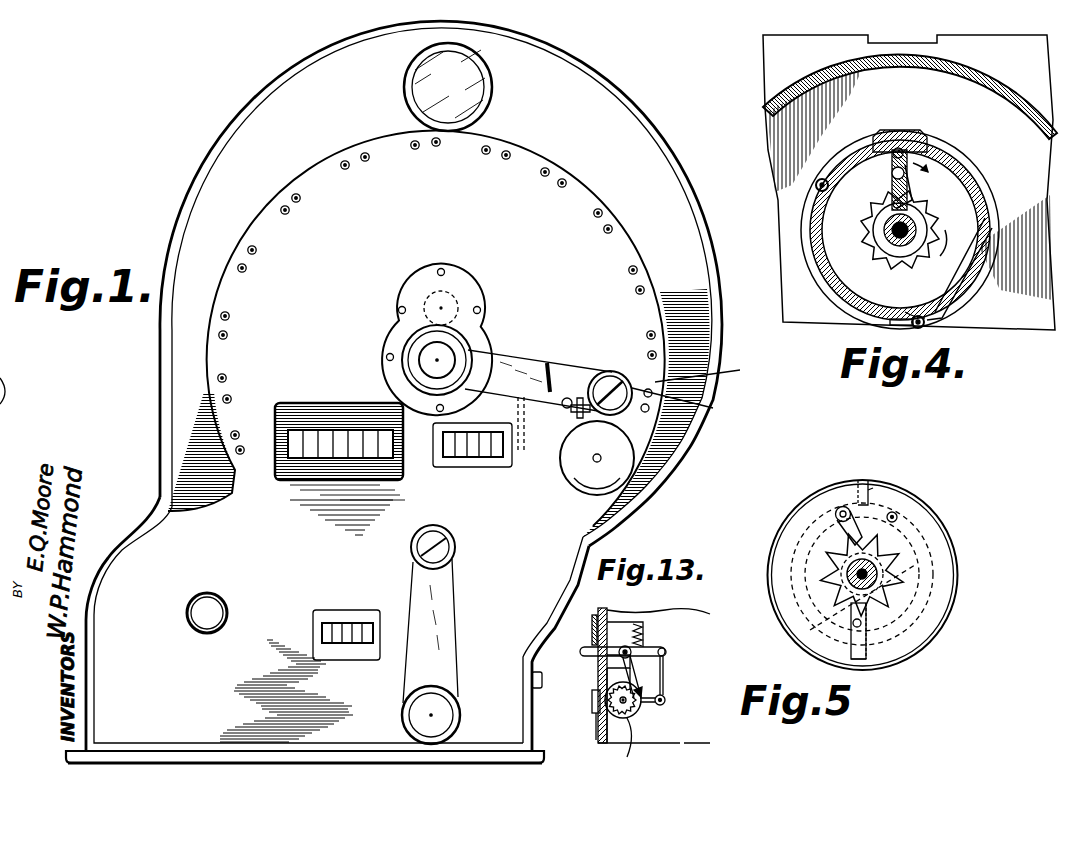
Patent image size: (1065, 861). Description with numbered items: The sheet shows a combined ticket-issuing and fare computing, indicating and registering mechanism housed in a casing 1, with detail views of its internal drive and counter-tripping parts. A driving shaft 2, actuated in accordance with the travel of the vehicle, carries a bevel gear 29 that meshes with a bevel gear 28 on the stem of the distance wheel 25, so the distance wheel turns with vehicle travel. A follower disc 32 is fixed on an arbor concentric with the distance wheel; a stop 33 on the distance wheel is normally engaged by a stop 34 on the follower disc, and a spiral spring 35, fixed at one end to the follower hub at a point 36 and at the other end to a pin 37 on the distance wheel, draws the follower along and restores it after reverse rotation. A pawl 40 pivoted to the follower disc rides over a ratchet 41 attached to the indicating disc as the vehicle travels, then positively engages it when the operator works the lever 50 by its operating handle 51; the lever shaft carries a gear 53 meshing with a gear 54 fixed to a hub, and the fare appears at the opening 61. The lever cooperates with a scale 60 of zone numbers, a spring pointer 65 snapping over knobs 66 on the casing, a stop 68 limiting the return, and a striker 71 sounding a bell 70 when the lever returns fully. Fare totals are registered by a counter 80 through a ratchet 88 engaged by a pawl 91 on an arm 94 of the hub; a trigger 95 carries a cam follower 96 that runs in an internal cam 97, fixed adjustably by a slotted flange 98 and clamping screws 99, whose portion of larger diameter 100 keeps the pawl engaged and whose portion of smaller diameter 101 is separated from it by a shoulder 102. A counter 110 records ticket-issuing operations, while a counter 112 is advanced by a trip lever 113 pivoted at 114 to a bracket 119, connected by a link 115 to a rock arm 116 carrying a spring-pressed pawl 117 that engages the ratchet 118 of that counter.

In FIG. 1, the casing 1 is at (159, 371).
In FIG. 13, the casing 1 is at (597, 730).
In FIG. 4, the casing 1 is at (1033, 118).
In FIG. 5, the driving shaft 2 is at (868, 650).
In FIG. 5, the distance wheel 25 is at (928, 513).
In FIG. 5, the bevel gear 28 is at (930, 560).
In FIG. 5, the bevel gear 29 is at (918, 584).
In FIG. 5, the follower disc 32 is at (920, 628).
In FIG. 5, the stop 33 is at (870, 482).
In FIG. 5, the stop 34 is at (870, 498).
In FIG. 5, the spiral spring 35 is at (792, 592).
In FIG. 5, the point 36 is at (855, 624).
In FIG. 5, the pin 37 is at (897, 516).
In FIG. 5, the pawl 40 is at (840, 522).
In FIG. 5, the ratchet 41 is at (828, 590).
In FIG. 1, the lever 50 is at (513, 387).
In FIG. 13, the lever 50 is at (600, 610).
In FIG. 1, the operating handle 51 is at (711, 370).
In FIG. 1, the gear 53 is at (473, 360).
In FIG. 1, the gear 54 is at (450, 294).
In FIG. 1, the scale 60 is at (437, 190).
In FIG. 1, the opening 61 is at (490, 73).
In FIG. 1, the spring pointer 65 is at (684, 398).
In FIG. 1, the knobs 66 is at (622, 181).
In FIG. 1, the stop 68 is at (575, 392).
In FIG. 1, the bell 70 is at (597, 458).
In FIG. 1, the striker 71 is at (586, 390).
In FIG. 1, the counter 80 is at (336, 422).
In FIG. 4, the ratchet 88 is at (899, 243).
In FIG. 4, the pawl 91 is at (915, 195).
In FIG. 4, the arm 94 is at (892, 188).
In FIG. 4, the trigger 95 is at (897, 143).
In FIG. 4, the cam follower 96 is at (903, 152).
In FIG. 4, the internal cam 97 is at (968, 252).
In FIG. 4, the slotted flange 98 is at (806, 270).
In FIG. 4, the clamping screws 99 is at (817, 187).
In FIG. 4, the portion of larger diameter 100 is at (975, 198).
In FIG. 4, the portion of smaller diameter 101 is at (922, 300).
In FIG. 4, the shoulder 102 is at (990, 224).
In FIG. 1, the counter 110 is at (355, 618).
In FIG. 1, the counter 112 is at (510, 468).
In FIG. 13, the counter 112 is at (643, 746).
In FIG. 1, the trip lever 113 is at (548, 365).
In FIG. 13, the trip lever 113 is at (585, 655).
In FIG. 13, the pivot 114 is at (643, 646).
In FIG. 13, the link 115 is at (664, 673).
In FIG. 13, the rock arm 116 is at (642, 703).
In FIG. 13, the spring-pressed pawl 117 is at (662, 654).
In FIG. 13, the ratchet 118 is at (630, 713).
In FIG. 13, the bracket 119 is at (598, 680).